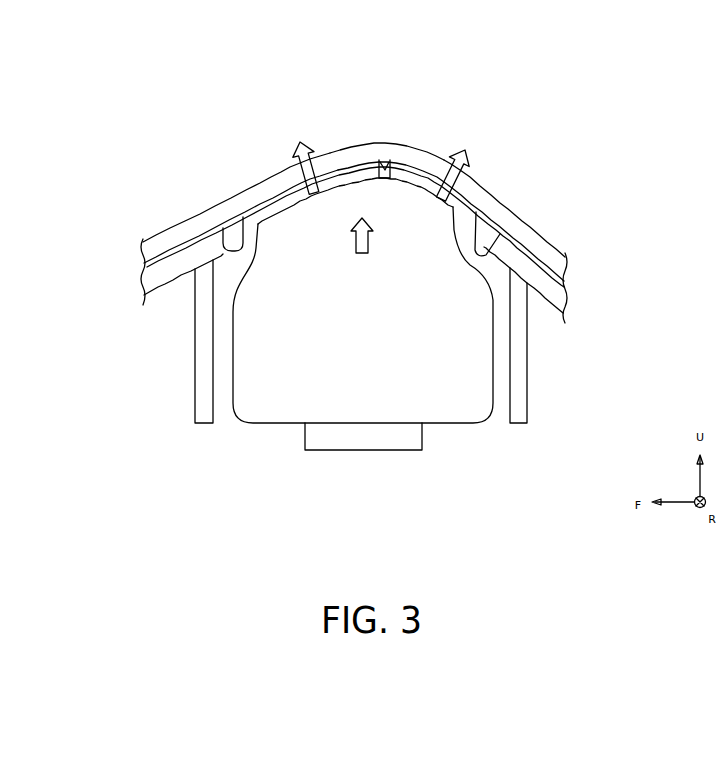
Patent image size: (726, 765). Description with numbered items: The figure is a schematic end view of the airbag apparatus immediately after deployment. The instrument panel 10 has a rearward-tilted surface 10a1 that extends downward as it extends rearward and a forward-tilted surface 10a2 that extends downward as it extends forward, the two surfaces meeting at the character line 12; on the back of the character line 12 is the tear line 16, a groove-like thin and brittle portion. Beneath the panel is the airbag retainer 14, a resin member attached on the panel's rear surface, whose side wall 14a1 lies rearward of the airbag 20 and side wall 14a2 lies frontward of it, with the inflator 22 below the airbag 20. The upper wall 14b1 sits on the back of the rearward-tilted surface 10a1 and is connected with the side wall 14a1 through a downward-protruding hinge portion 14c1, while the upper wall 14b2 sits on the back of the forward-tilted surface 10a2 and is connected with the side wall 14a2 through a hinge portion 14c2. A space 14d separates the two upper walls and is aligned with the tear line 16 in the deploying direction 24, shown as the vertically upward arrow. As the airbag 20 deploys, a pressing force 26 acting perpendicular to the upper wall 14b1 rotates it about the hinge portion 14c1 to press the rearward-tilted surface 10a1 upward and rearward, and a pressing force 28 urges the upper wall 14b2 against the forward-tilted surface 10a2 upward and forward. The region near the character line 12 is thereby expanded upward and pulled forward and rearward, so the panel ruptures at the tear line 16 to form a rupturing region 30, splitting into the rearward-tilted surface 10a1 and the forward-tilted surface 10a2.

The instrument panel 10 is at (360, 180).
The rearward-tilted surface 10a1 is at (482, 183).
The forward-tilted surface 10a2 is at (333, 151).
The character line 12 is at (391, 161).
The airbag retainer 14 is at (359, 286).
The side wall 14a1 is at (513, 427).
The side wall 14a2 is at (203, 427).
The upper wall 14b1 is at (479, 229).
The upper wall 14b2 is at (246, 191).
The hinge portion 14c1 is at (497, 232).
The hinge portion 14c2 is at (222, 226).
The space 14d is at (417, 148).
The tear line 16 is at (381, 158).
The airbag 20 is at (273, 427).
The inflator 22 is at (350, 452).
The deploying direction 24 is at (348, 244).
The pressing force 26 is at (467, 158).
The pressing force 28 is at (293, 144).
The rupturing region 30 is at (386, 160).